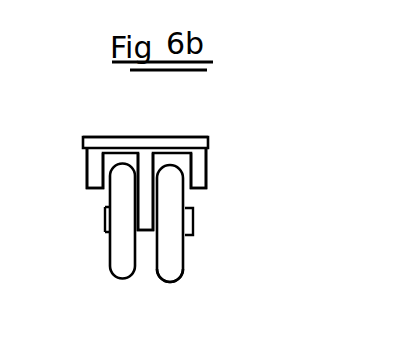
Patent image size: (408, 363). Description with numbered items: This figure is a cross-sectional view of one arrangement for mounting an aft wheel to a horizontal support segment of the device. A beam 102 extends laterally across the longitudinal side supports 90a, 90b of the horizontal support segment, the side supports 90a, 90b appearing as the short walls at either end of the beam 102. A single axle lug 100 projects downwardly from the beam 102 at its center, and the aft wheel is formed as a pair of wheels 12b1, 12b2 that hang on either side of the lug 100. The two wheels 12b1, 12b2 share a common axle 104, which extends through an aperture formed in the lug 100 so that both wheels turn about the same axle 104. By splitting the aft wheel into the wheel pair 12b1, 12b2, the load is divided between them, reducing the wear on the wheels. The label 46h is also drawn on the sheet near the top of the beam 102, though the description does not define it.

The beam 102 is at (160, 147).
The top plate 46h is at (128, 137).
The longitudinal side support 90a is at (97, 165).
The longitudinal side support 90b is at (200, 160).
The axle lug 100 is at (148, 196).
The wheel 12b1 is at (120, 258).
The wheel 12b2 is at (176, 259).
The common axle 104 is at (162, 276).